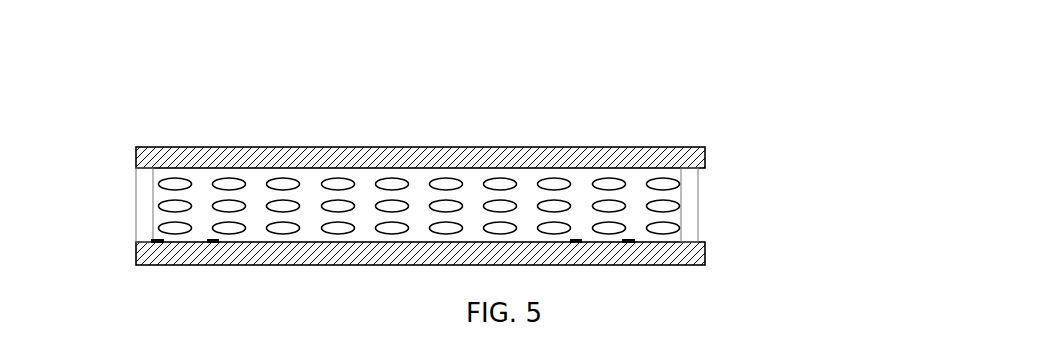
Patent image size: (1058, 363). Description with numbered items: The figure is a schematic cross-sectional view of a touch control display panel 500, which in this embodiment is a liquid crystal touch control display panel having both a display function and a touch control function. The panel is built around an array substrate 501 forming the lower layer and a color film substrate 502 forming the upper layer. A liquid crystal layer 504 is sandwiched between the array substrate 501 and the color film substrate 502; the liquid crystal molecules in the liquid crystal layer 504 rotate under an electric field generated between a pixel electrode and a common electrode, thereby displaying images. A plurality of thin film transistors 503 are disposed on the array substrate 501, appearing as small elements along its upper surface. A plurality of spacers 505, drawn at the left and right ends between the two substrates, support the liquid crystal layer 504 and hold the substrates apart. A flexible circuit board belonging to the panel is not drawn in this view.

The touch control display panel 500 is at (198, 90).
The array substrate 501 is at (705, 252).
The color film substrate 502 is at (705, 160).
The thin film transistors 503 is at (158, 240).
The liquid crystal layer 504 is at (679, 207).
The spacers 505 is at (692, 188).